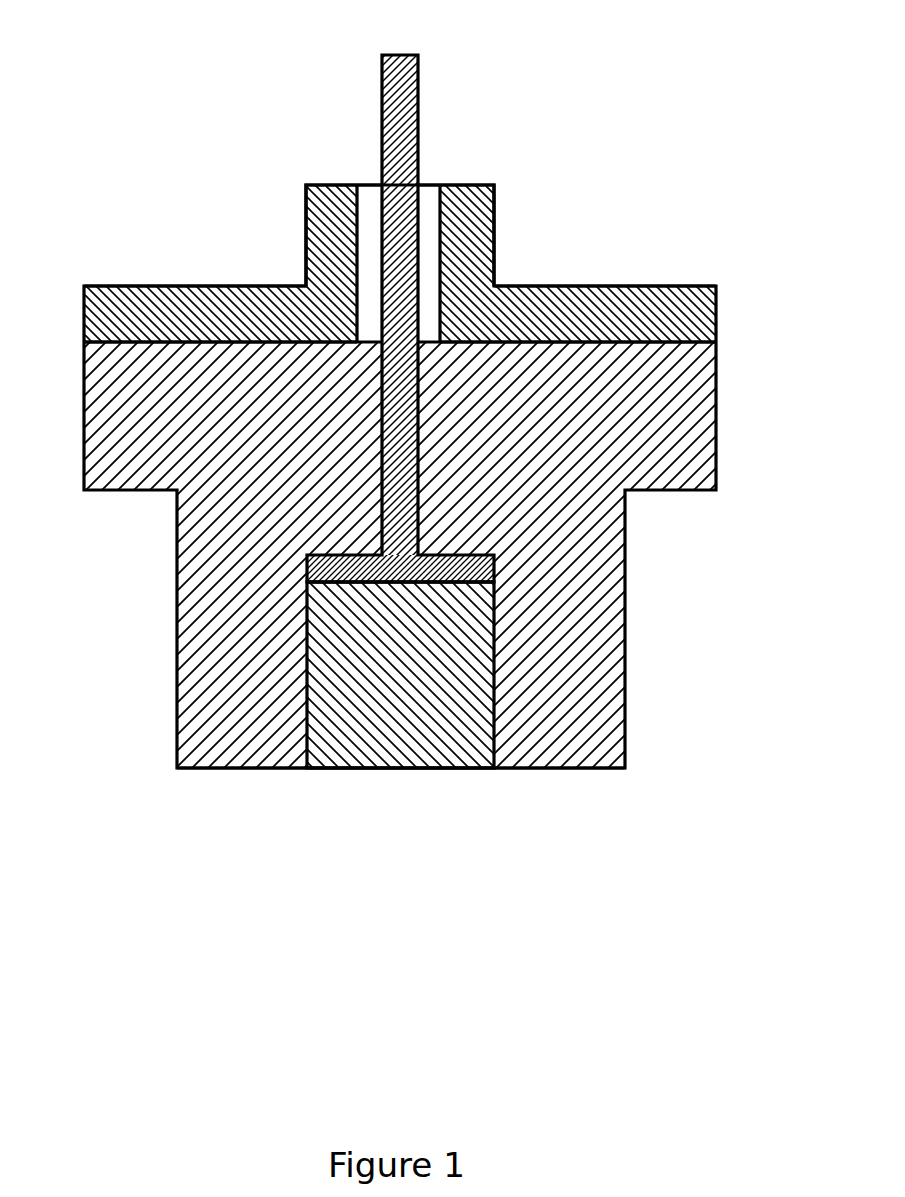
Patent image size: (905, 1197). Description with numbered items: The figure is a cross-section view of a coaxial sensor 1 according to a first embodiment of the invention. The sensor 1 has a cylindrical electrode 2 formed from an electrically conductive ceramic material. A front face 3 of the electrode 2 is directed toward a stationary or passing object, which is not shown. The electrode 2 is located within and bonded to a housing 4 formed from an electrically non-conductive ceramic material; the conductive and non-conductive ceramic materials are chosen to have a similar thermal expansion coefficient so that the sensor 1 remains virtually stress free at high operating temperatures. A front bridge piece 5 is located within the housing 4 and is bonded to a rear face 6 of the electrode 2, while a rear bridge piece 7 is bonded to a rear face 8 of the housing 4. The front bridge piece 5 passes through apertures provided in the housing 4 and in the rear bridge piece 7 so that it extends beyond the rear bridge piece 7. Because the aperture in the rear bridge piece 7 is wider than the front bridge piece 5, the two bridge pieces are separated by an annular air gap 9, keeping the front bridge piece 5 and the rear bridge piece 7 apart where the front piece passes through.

The sensor 1 is at (416, 489).
The electrode 2 is at (430, 732).
The front face 3 is at (330, 780).
The housing 4 is at (570, 677).
The front bridge piece 5 is at (480, 565).
The rear face 6 is at (340, 593).
The rear bridge piece 7 is at (648, 310).
The rear face 8 is at (158, 307).
The annular air gap 9 is at (332, 183).